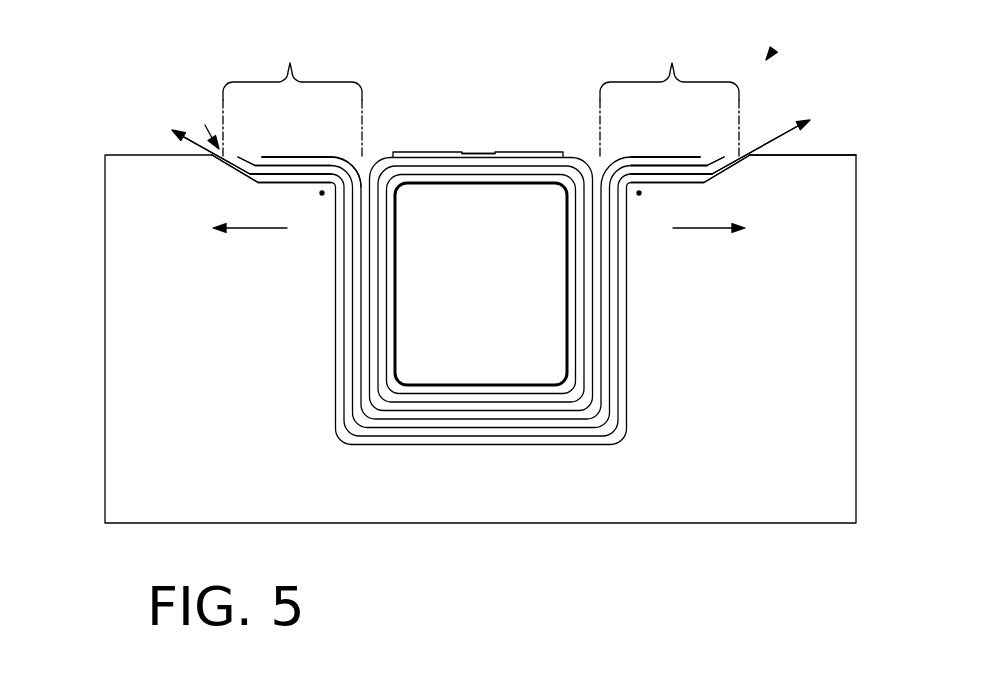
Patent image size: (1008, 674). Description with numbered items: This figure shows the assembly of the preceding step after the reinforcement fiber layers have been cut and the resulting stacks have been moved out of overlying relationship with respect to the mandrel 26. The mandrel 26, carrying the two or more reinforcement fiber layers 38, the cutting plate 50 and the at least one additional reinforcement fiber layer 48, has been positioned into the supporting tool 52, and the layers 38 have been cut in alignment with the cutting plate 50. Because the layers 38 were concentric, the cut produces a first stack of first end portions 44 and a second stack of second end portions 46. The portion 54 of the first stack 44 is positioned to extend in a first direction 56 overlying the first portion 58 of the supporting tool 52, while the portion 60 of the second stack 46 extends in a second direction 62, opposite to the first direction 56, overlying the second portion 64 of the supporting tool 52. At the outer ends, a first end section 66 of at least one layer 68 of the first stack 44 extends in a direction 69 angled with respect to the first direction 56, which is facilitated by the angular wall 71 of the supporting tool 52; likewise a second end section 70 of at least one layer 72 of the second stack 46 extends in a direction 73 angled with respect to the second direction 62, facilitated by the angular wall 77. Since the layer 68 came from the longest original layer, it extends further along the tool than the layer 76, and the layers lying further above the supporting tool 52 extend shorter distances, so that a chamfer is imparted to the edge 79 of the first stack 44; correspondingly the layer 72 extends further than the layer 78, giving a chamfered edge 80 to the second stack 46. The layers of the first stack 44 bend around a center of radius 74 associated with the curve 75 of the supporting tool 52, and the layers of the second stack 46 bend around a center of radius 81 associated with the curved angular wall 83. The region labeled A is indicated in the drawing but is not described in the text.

The mandrel 26 is at (398, 308).
The two or more reinforcement fiber layers 38 is at (363, 331).
The first stack of first end portions 44 is at (290, 62).
The second stack of second end portions 46 is at (672, 62).
The at least one additional reinforcement fiber layer 48 is at (503, 155).
The cutting plate 50 is at (430, 148).
The supporting tool 52 is at (153, 328).
The portion of first stack of first end portions 54 is at (292, 192).
The first direction 56 is at (258, 235).
The first portion of supporting tool 58 is at (309, 166).
The portion of second stack of second end portions 60 is at (640, 193).
The second direction 62 is at (702, 232).
The second portion of supporting tool 64 is at (637, 167).
The first end section 66 is at (242, 164).
The at least one layer of first stack 68 is at (283, 158).
The direction 69 is at (192, 143).
The second end section 70 is at (748, 170).
The angular wall 71 is at (245, 174).
The at least one layer of second stack 72 is at (678, 173).
The direction 73 is at (782, 133).
The center of radius 74 is at (322, 193).
The curve of supporting tool 75 is at (362, 157).
The layer of first stack 76 is at (279, 172).
The angular wall 77 is at (735, 178).
The layer of second stack 78 is at (657, 167).
The edge of first stack 79 is at (207, 128).
The edge of second stack 80 is at (764, 159).
The center of radius 81 is at (639, 193).
The curved angular wall 83 is at (606, 170).
The region A is at (773, 51).